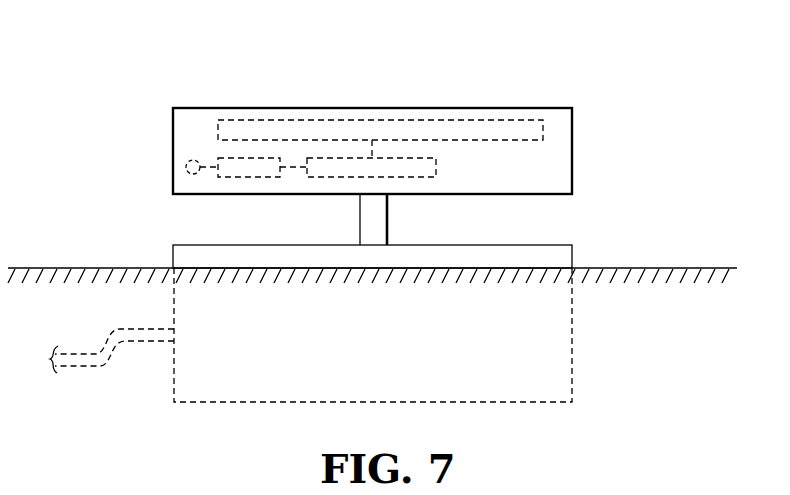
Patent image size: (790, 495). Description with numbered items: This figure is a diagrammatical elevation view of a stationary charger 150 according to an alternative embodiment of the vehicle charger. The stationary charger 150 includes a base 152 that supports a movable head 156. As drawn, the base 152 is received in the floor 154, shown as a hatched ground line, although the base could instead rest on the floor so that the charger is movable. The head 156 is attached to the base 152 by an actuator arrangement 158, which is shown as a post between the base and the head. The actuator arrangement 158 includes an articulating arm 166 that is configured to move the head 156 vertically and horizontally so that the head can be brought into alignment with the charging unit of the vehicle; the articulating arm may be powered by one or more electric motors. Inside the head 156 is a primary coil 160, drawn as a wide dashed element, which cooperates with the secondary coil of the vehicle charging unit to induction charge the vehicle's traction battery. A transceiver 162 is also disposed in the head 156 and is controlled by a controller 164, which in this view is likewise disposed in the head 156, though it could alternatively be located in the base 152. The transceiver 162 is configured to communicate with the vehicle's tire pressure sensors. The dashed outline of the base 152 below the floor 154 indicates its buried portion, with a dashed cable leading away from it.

The stationary charger 150 is at (556, 72).
The base 152 is at (572, 355).
The floor 154 is at (642, 268).
The movable head 156 is at (572, 158).
The actuator arrangement 158 is at (360, 205).
The primary coil 160 is at (338, 120).
The transceiver 162 is at (248, 178).
The controller 164 is at (436, 166).
The articulating arm 166 is at (373, 236).